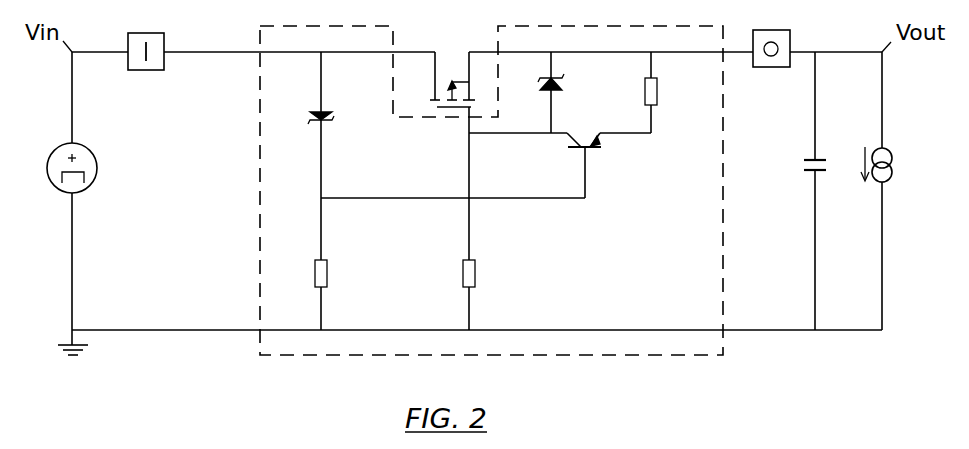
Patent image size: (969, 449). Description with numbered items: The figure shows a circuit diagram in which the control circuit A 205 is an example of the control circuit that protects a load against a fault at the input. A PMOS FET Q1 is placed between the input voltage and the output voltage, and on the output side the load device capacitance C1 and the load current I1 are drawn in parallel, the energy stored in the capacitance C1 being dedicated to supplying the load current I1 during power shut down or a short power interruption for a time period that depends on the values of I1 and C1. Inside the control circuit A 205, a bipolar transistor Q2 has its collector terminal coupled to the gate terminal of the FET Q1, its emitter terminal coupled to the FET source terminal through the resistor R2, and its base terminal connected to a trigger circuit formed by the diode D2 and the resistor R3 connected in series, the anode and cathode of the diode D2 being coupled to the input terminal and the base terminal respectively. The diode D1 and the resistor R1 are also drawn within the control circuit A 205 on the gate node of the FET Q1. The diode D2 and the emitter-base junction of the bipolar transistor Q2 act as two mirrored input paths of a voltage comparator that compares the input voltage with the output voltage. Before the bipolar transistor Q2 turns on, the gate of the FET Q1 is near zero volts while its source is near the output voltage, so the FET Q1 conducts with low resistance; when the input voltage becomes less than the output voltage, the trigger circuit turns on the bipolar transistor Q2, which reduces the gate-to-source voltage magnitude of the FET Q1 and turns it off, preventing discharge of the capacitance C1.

The control circuit A 205 is at (628, 310).
The FET Q1 is at (438, 79).
The bipolar transistor Q2 is at (599, 165).
The diode D1 is at (568, 92).
The diode D2 is at (337, 125).
The resistor R1 is at (485, 218).
The resistor R2 is at (667, 92).
The resistor R3 is at (337, 264).
The load device capacitance C1 is at (799, 191).
The load current I1 is at (889, 191).